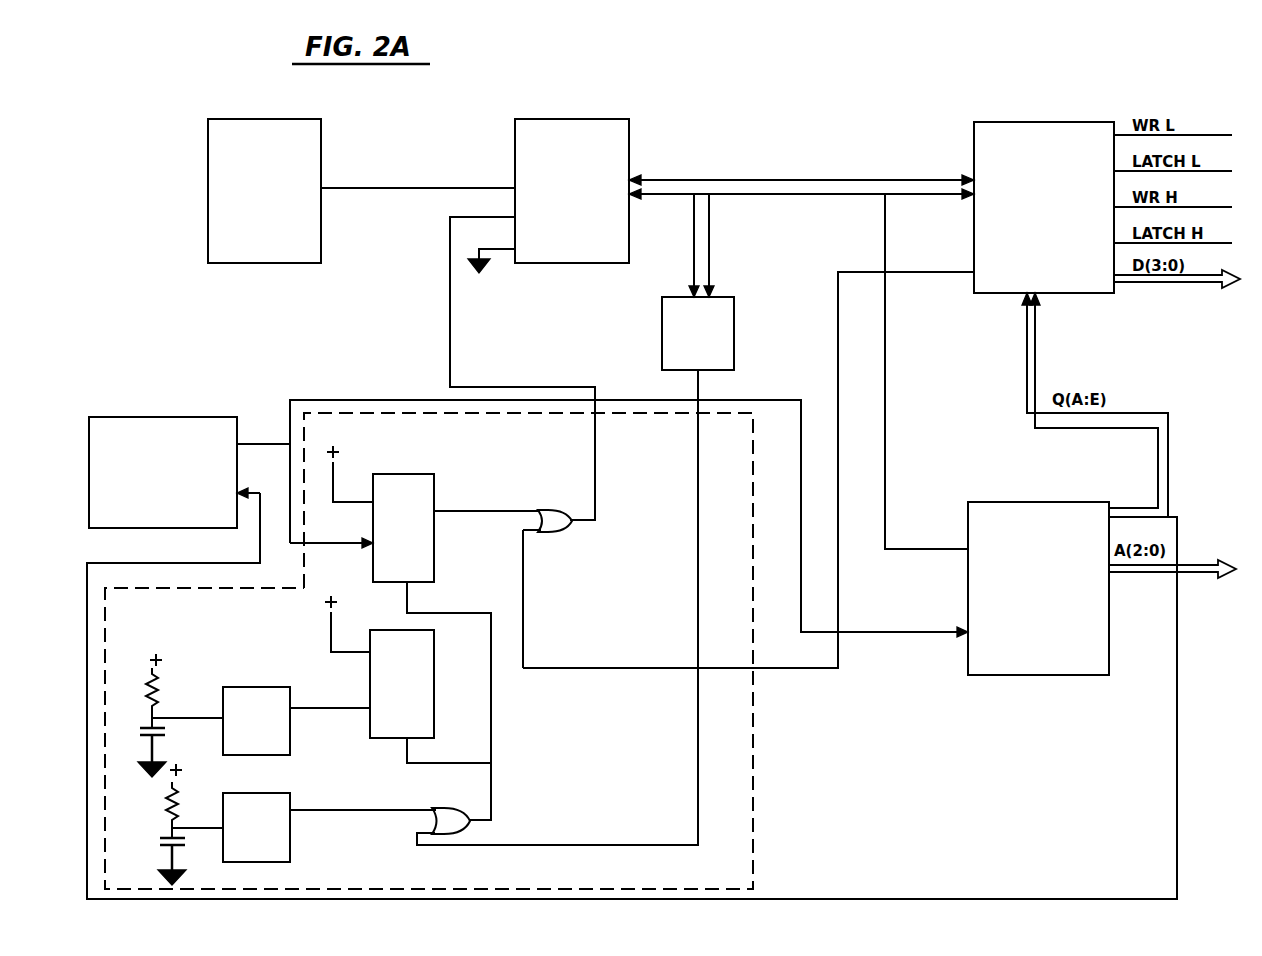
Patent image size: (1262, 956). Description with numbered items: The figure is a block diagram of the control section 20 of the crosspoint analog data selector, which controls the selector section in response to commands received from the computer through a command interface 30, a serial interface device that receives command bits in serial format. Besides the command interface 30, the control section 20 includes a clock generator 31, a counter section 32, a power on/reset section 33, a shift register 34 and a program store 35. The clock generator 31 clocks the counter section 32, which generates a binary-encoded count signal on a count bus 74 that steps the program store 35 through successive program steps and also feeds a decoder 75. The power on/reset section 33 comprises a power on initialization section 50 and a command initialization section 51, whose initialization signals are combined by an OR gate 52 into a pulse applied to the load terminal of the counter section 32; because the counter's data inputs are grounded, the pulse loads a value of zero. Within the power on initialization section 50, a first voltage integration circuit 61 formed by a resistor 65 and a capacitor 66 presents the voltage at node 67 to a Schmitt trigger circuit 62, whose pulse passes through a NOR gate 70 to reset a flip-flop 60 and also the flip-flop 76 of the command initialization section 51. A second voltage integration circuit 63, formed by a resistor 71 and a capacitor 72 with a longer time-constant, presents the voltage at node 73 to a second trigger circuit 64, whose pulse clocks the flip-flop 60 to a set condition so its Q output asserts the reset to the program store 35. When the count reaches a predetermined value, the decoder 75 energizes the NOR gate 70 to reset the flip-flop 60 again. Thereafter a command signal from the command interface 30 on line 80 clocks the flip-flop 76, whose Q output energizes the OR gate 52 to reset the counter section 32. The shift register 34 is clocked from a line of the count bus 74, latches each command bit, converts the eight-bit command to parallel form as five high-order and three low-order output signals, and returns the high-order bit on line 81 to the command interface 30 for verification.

The control section 20 is at (662, 696).
The command interface 30 is at (163, 472).
The clock generator 31 is at (264, 191).
The counter section 32 is at (572, 191).
The power on/reset section 33 is at (429, 651).
The shift register 34 is at (1038, 588).
The program store 35 is at (1044, 207).
The power on initialization section 50 is at (605, 723).
The command initialization section 51 is at (433, 619).
The OR gate 52 is at (546, 534).
The flip-flop 60 is at (370, 672).
The first voltage integration circuit 61 is at (181, 824).
The trigger circuit 62 is at (256, 827).
The second voltage integration circuit 63 is at (165, 695).
The second trigger circuit 64 is at (256, 721).
The resistor 65 is at (182, 797).
The capacitor 66 is at (186, 842).
The node 67 is at (182, 828).
The NOR gate 70 is at (456, 806).
The resistor 71 is at (148, 697).
The capacitor 72 is at (148, 738).
The node 73 is at (156, 718).
The count bus 74 is at (788, 177).
The decoder 75 is at (698, 333).
The flip-flop 76 is at (434, 537).
The line 80 is at (369, 395).
The line 81 is at (1177, 782).